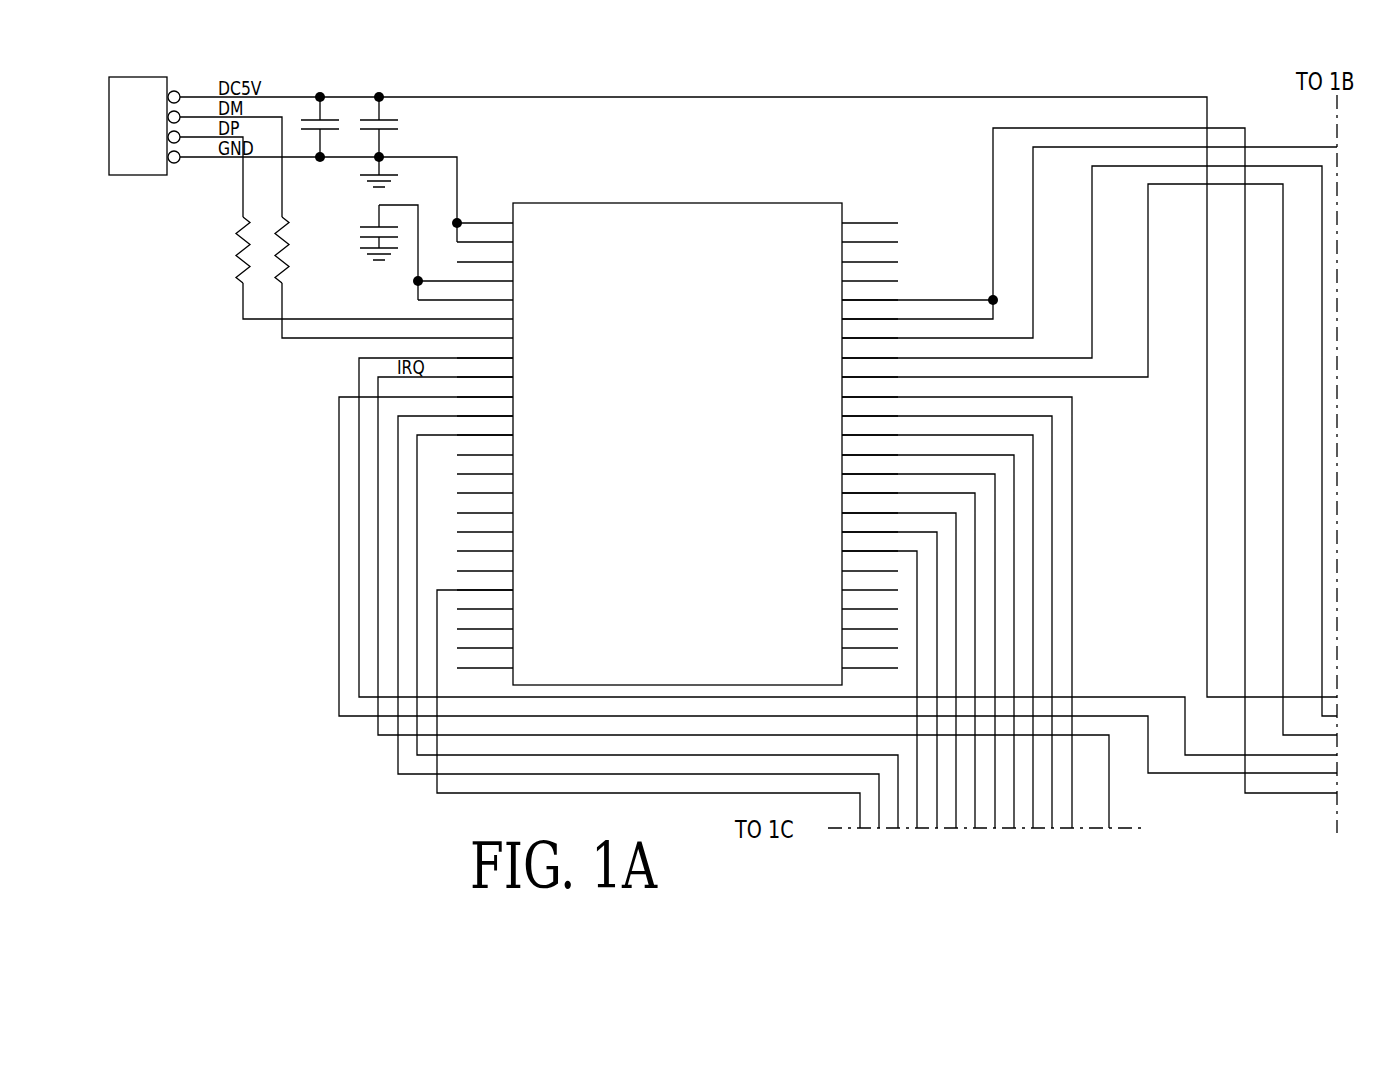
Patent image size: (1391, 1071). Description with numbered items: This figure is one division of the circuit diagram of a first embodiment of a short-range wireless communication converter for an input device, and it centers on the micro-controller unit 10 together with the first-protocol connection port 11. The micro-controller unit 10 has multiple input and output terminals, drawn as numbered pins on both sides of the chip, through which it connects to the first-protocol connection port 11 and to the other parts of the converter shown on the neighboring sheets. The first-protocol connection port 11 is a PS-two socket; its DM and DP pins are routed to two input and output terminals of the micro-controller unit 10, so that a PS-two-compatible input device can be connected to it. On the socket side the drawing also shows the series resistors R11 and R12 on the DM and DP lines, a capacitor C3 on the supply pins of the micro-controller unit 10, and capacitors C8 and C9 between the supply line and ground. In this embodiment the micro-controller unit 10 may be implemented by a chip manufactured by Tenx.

The micro-controller unit (MCU) 10 is at (649, 203).
The first-protocol connection port 11 is at (157, 77).
The resistor R11 is at (301, 250).
The resistor R12 is at (221, 250).
The capacitor C3 is at (365, 231).
The capacitor C8 is at (405, 142).
The capacitor C9 is at (333, 127).